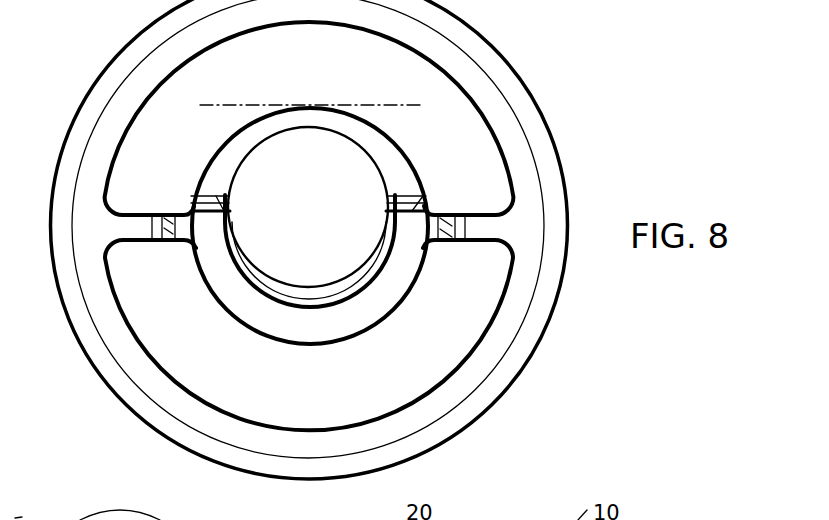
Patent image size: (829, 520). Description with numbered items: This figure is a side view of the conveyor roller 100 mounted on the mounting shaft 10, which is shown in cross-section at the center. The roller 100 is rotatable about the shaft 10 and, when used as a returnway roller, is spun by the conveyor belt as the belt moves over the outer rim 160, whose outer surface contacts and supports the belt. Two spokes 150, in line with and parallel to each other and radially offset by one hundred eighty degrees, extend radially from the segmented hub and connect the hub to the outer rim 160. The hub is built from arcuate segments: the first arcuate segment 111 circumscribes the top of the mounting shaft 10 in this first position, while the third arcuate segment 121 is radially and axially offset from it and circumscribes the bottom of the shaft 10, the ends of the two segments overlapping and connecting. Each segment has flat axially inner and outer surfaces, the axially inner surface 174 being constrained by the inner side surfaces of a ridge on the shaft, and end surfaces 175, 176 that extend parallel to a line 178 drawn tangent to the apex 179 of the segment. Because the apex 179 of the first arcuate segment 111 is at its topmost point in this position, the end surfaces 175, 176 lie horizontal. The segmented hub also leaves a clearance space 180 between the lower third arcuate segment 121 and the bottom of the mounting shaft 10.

The conveyor roller 100 is at (562, 126).
The outer rim 160 is at (522, 357).
The spokes 150 is at (151, 214).
The mounting shaft 10 is at (318, 218).
The first arcuate segment 111 is at (408, 160).
The third arcuate segment 121 is at (385, 293).
The end surface 175 is at (428, 193).
The end surface 176 is at (217, 203).
The line 178 is at (212, 101).
The apex 179 is at (307, 99).
The axially inner surface 174 is at (316, 360).
The clearance space 180 is at (257, 273).